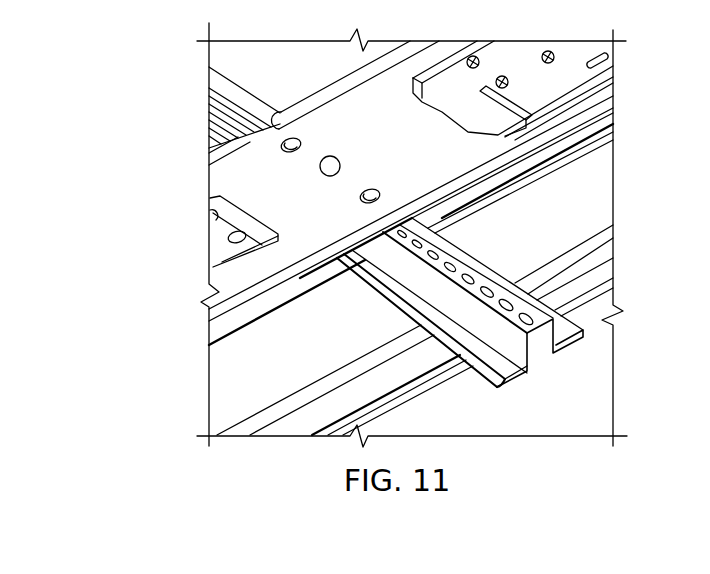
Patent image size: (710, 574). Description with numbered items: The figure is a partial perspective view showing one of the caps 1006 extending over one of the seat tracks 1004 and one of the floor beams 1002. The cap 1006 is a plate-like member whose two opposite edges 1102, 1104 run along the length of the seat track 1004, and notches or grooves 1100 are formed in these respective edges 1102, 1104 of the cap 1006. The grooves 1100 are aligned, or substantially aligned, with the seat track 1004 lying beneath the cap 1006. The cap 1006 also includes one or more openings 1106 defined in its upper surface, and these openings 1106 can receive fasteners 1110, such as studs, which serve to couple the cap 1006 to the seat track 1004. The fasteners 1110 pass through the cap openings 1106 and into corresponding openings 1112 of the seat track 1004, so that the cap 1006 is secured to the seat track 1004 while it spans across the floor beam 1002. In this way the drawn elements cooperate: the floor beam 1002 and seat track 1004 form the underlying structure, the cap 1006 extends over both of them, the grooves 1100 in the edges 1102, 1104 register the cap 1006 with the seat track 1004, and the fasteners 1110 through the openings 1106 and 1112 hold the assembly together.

The grooves 1100 is at (253, 160).
The edge 1104 is at (350, 83).
The openings 1106 is at (304, 140).
The fasteners 1110 is at (341, 163).
The openings 1112 is at (464, 254).
The cap 1006 is at (283, 317).
The edge 1102 is at (597, 143).
The floor beam 1002 is at (597, 208).
The seat track 1004 is at (562, 296).